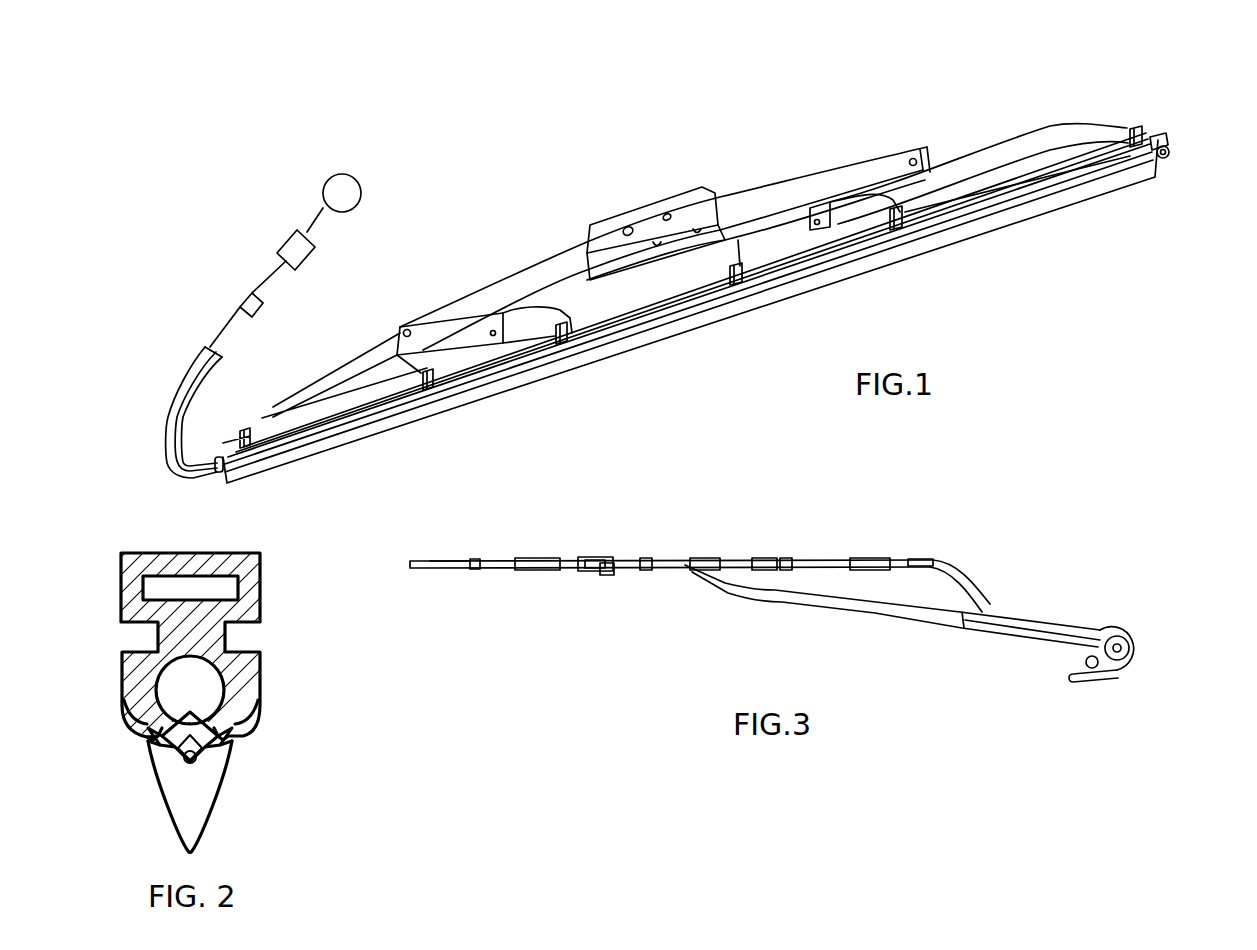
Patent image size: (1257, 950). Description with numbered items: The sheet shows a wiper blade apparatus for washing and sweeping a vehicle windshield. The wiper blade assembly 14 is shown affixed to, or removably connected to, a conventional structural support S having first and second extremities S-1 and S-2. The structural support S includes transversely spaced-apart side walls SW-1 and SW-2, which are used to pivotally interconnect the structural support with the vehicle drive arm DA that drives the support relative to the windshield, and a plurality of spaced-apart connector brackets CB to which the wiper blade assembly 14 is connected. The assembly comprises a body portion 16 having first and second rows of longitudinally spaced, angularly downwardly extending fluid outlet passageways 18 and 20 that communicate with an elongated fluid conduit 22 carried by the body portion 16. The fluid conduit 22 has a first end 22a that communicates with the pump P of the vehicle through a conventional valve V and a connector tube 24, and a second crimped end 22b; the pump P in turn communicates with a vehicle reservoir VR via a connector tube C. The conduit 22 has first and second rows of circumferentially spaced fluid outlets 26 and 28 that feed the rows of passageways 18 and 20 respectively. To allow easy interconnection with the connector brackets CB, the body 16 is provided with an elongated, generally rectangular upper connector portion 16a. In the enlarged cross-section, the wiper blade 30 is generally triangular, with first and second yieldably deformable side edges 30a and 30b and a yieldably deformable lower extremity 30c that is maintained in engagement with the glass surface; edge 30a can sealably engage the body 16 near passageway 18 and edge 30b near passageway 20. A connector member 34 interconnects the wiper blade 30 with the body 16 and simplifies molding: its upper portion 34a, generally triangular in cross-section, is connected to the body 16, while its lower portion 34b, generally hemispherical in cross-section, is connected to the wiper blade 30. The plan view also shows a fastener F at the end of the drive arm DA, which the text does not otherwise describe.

In FIG. 1, the wiper blade assembly 14 is at (1127, 196).
In FIG. 2, the wiper blade assembly 14 is at (270, 670).
In FIG. 1, the body portion 16 is at (1000, 203).
In FIG. 1, the upper connector portion 16a is at (932, 203).
In FIG. 2, the upper connector portion 16a is at (178, 562).
In FIG. 2, the fluid outlet passageway 18 is at (230, 733).
In FIG. 2, the fluid outlet passageway 20 is at (150, 733).
In FIG. 1, the elongated fluid conduit 22 is at (1165, 140).
In FIG. 2, the elongated fluid conduit 22 is at (185, 685).
In FIG. 1, the first end 22a is at (217, 470).
In FIG. 3, the first end 22a is at (908, 565).
In FIG. 1, the second crimped end 22b is at (1170, 158).
In FIG. 1, the connector tube 24 is at (193, 377).
In FIG. 3, the connector tube 24 is at (967, 580).
In FIG. 2, the fluid outlet 26 is at (227, 717).
In FIG. 2, the fluid outlet 28 is at (155, 718).
In FIG. 2, the wiper blade 30 is at (193, 790).
In FIG. 2, the first side edge 30a is at (225, 747).
In FIG. 2, the second side edge 30b is at (158, 745).
In FIG. 2, the lower extremity 30c is at (188, 815).
In FIG. 2, the connector member 34 is at (222, 712).
In FIG. 2, the upper portion 34a is at (150, 718).
In FIG. 2, the lower portion 34b is at (190, 747).
In FIG. 1, the structural support S is at (823, 160).
In FIG. 3, the structural support S is at (773, 554).
In FIG. 1, the first extremity S-1 is at (270, 402).
In FIG. 3, the first extremity S-1 is at (860, 557).
In FIG. 1, the second extremity S-2 is at (1112, 122).
In FIG. 3, the second extremity S-2 is at (478, 557).
In FIG. 1, the side wall SW-1 is at (643, 210).
In FIG. 3, the side wall SW-1 is at (568, 559).
In FIG. 1, the side wall SW-2 is at (660, 273).
In FIG. 3, the side wall SW-2 is at (593, 567).
In FIG. 1, the connector bracket CB is at (240, 435).
In FIG. 1, the vehicle reservoir VR is at (330, 190).
In FIG. 1, the pump P is at (283, 243).
In FIG. 1, the valve V is at (260, 315).
In FIG. 1, the connector tube C is at (317, 223).
In FIG. 3, the vehicle drive arm DA is at (838, 600).
In FIG. 3, the fastener F is at (1092, 668).